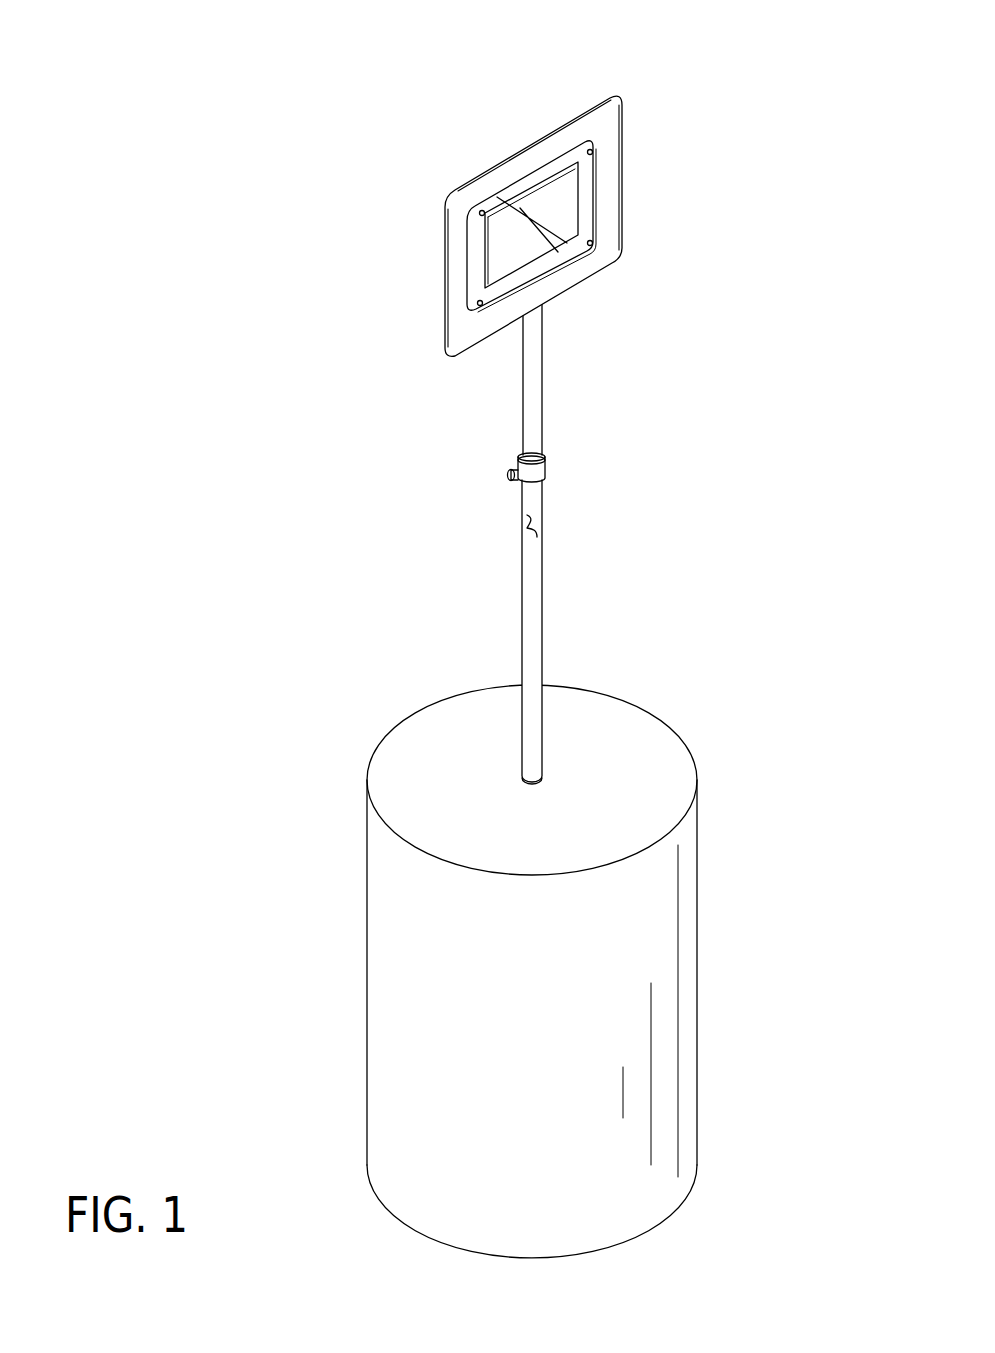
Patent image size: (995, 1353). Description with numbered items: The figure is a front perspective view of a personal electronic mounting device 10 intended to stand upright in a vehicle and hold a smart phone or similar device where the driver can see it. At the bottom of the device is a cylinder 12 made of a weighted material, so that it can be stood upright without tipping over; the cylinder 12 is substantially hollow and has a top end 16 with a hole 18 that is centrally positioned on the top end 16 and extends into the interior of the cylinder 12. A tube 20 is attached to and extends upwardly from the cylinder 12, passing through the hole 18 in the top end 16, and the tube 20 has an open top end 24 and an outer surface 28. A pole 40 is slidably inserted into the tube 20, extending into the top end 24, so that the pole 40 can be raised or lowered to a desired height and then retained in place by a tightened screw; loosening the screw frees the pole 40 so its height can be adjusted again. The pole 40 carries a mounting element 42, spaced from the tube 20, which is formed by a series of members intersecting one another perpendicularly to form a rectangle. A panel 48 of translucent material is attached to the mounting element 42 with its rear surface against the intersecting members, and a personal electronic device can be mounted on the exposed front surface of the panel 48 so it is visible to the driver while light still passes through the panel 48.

The personal electronic mounting device 10 is at (393, 98).
The cylinder 12 is at (705, 742).
The top end 16 is at (425, 727).
The hole 18 is at (532, 782).
The tube 20 is at (540, 567).
The top end 24 is at (527, 457).
The outer surface 28 is at (527, 515).
The pole 40 is at (533, 373).
The mounting element 42 is at (578, 137).
The panel 48 is at (443, 197).